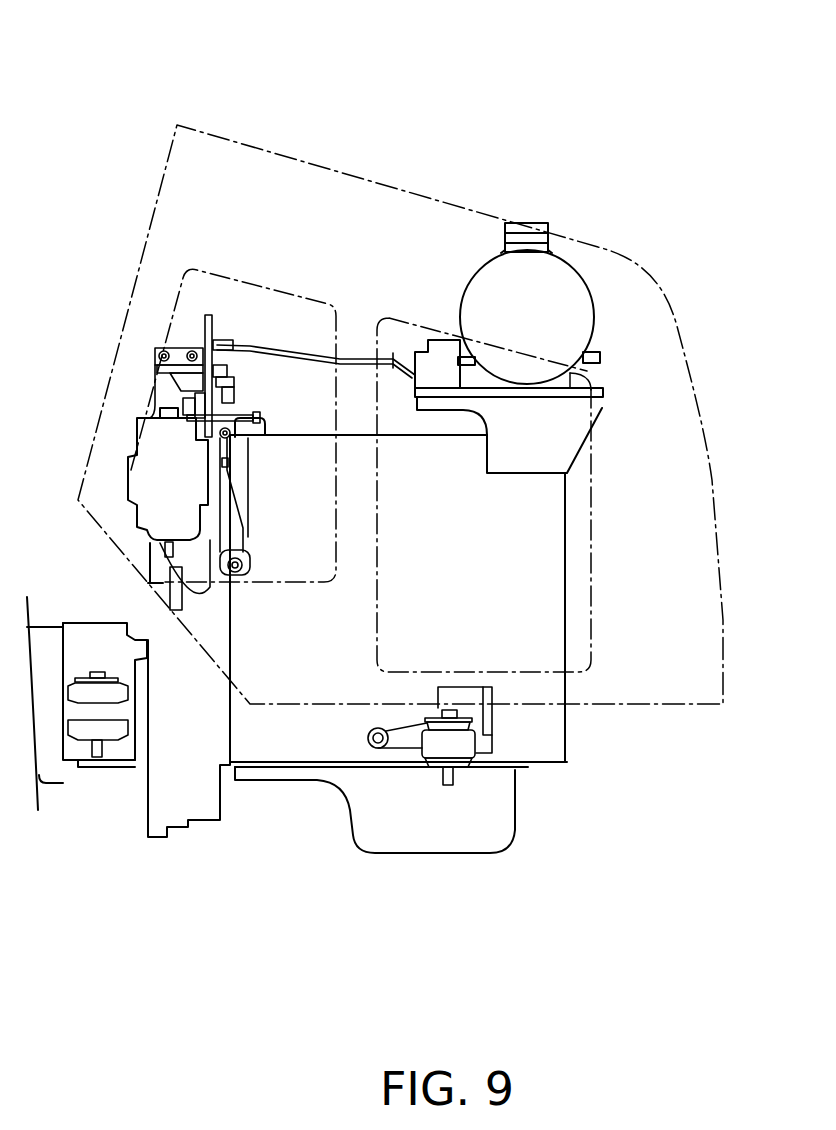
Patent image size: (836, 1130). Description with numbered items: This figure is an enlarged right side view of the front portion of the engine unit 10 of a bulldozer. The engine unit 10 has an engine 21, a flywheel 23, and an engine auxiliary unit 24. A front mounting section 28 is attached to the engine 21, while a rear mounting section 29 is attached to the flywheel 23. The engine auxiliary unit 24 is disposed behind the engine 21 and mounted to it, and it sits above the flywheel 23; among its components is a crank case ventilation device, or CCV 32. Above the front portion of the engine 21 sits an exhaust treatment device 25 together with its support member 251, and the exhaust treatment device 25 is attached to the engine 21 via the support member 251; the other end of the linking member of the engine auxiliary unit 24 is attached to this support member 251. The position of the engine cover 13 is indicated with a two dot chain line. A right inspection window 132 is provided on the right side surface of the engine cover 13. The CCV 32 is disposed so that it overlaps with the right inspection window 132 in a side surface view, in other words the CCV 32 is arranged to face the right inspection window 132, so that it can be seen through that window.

The engine unit 10 is at (548, 166).
The engine cover 13 is at (390, 183).
The right inspection window 132 is at (248, 280).
The engine 21 is at (612, 604).
The flywheel 23 is at (193, 815).
The engine auxiliary unit 24 is at (138, 406).
The exhaust treatment device 25 is at (553, 285).
The support member 251 is at (437, 353).
The front mounting section 28 is at (455, 752).
The rear mounting section 29 is at (112, 713).
The crank case ventilation device 32 is at (143, 470).